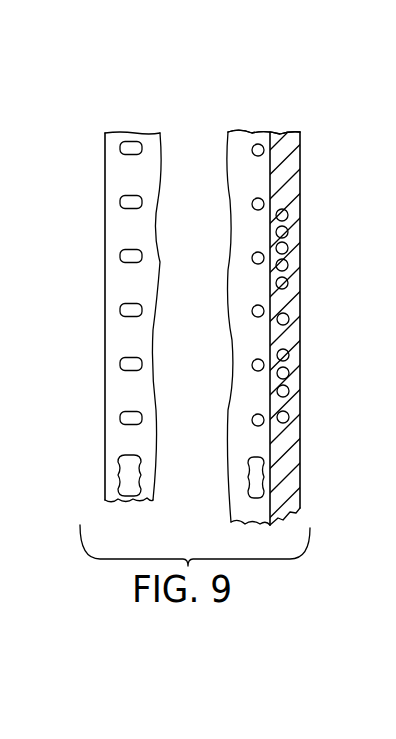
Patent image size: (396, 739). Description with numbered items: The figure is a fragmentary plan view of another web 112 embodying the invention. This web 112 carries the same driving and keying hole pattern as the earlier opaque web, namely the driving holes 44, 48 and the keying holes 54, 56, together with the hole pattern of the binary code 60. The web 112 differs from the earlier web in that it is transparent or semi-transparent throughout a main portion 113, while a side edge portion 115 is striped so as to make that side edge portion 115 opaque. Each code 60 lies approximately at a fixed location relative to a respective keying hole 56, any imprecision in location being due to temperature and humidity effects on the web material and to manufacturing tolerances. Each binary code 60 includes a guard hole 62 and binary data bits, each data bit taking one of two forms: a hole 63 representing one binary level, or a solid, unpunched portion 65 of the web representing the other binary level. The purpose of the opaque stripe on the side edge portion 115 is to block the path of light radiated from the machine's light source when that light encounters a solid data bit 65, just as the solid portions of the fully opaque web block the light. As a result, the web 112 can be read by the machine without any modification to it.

The web 112 is at (248, 124).
The main portion 113 is at (240, 150).
The side edge portion 115 is at (290, 167).
The driving holes 44 is at (142, 312).
The driving holes 48 is at (254, 306).
The keying hole 54 is at (139, 462).
The keying hole 56 is at (249, 492).
The binary code 60 is at (304, 271).
The guard hole 62 is at (289, 417).
The hole 63 is at (289, 381).
The solid unpunched portion 65 is at (286, 327).